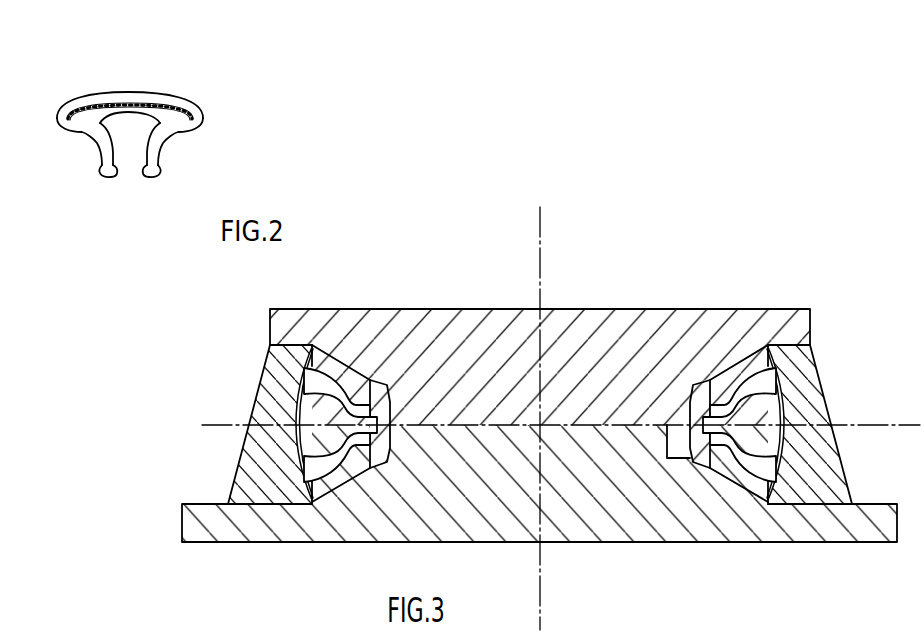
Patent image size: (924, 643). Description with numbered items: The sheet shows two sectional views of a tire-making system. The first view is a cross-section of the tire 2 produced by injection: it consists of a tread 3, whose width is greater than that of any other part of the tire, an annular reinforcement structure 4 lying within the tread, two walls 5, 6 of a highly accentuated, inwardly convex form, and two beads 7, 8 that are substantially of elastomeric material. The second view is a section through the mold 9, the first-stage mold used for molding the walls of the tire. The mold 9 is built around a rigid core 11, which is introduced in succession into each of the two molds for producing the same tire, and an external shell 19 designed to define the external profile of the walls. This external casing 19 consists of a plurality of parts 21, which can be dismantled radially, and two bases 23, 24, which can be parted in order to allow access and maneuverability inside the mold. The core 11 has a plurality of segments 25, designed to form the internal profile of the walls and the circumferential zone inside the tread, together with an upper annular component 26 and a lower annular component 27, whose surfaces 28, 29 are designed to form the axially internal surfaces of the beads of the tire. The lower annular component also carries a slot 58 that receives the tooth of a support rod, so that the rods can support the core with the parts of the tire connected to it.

In FIG. 2, the tire 2 is at (224, 111).
In FIG. 2, the tread 3 is at (130, 92).
In FIG. 2, the annular reinforcement structure 4 is at (166, 109).
In FIG. 2, the wall 5 is at (90, 141).
In FIG. 2, the wall 6 is at (167, 145).
In FIG. 2, the bead 7 is at (103, 178).
In FIG. 2, the bead 8 is at (155, 178).
In FIG. 3, the mold 9 is at (482, 296).
In FIG. 3, the rigid core 11 is at (782, 426).
In FIG. 3, the external shell 19 is at (309, 473).
In FIG. 3, the part 21 is at (838, 473).
In FIG. 3, the base 23 is at (575, 312).
In FIG. 3, the base 24 is at (592, 534).
In FIG. 3, the segment 25 is at (768, 448).
In FIG. 3, the upper annular component 26 is at (702, 470).
In FIG. 3, the lower annular component 27 is at (702, 387).
In FIG. 3, the surface 28 is at (728, 450).
In FIG. 3, the surface 29 is at (720, 397).
In FIG. 3, the slot 58 is at (692, 460).